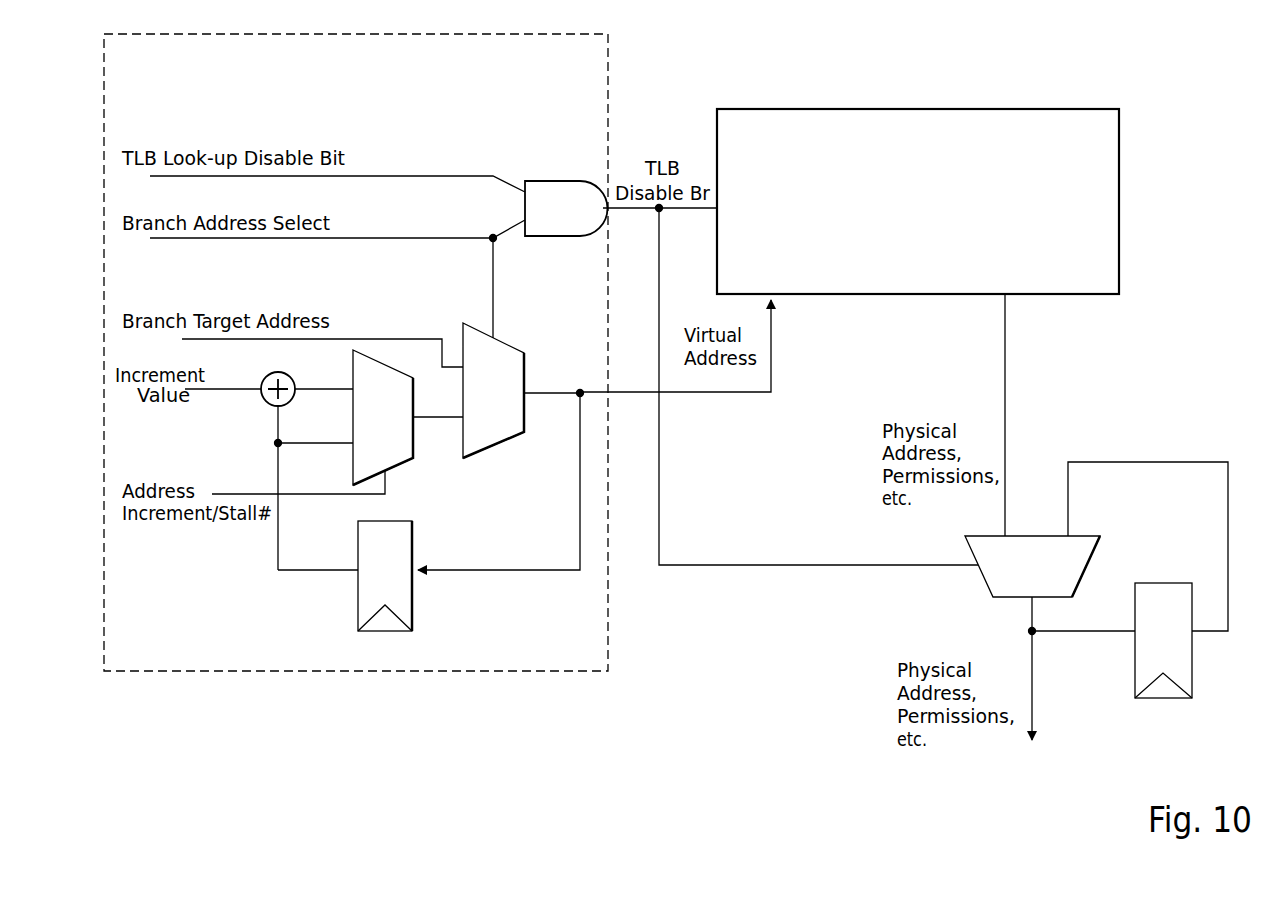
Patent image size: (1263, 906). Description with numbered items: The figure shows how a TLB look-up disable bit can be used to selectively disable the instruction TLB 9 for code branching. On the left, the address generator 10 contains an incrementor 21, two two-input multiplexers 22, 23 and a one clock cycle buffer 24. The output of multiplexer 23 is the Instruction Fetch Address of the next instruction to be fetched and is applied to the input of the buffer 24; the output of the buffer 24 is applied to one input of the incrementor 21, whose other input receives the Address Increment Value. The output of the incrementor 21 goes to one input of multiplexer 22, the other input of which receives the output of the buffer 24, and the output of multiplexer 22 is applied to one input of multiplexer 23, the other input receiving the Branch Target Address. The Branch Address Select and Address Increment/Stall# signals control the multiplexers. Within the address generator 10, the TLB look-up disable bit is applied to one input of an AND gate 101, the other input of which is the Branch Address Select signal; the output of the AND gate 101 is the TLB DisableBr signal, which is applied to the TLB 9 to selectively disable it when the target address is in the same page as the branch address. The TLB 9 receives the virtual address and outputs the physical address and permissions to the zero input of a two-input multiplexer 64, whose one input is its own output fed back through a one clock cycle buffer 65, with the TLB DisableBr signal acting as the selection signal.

The address generator 10 is at (592, 71).
The AND gate 101 is at (552, 181).
The TLB 9 is at (1092, 286).
The incrementor 21 is at (262, 395).
The multiplexer 22 is at (408, 462).
The multiplexer 23 is at (500, 447).
The one clock cycle buffer 24 is at (412, 616).
The multiplexer 64 is at (985, 588).
The one clock cycle buffer 65 is at (1192, 676).